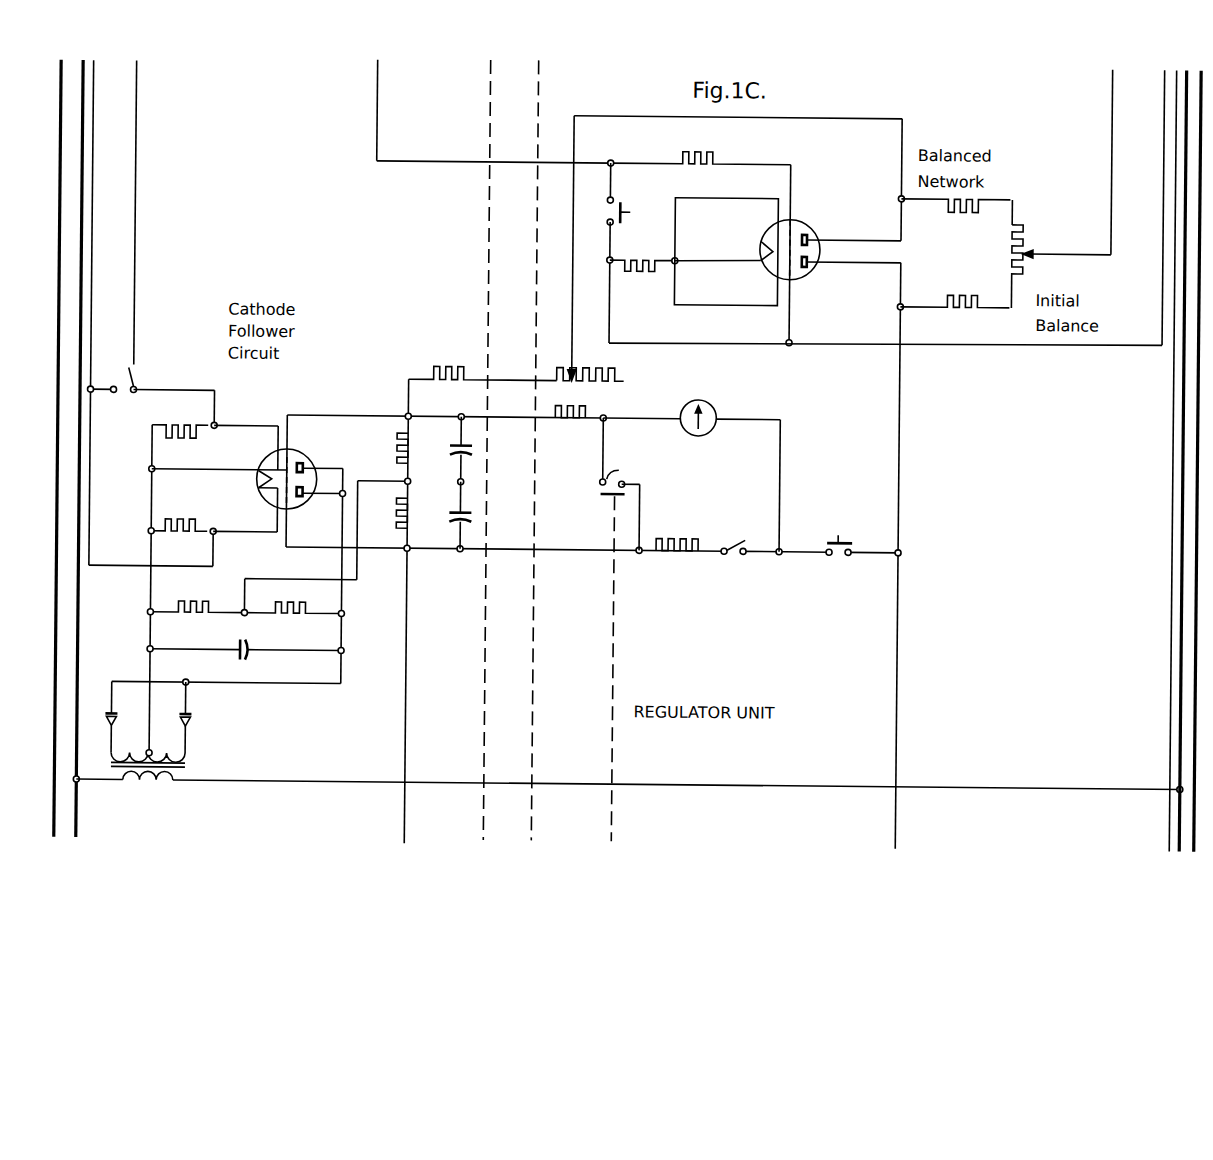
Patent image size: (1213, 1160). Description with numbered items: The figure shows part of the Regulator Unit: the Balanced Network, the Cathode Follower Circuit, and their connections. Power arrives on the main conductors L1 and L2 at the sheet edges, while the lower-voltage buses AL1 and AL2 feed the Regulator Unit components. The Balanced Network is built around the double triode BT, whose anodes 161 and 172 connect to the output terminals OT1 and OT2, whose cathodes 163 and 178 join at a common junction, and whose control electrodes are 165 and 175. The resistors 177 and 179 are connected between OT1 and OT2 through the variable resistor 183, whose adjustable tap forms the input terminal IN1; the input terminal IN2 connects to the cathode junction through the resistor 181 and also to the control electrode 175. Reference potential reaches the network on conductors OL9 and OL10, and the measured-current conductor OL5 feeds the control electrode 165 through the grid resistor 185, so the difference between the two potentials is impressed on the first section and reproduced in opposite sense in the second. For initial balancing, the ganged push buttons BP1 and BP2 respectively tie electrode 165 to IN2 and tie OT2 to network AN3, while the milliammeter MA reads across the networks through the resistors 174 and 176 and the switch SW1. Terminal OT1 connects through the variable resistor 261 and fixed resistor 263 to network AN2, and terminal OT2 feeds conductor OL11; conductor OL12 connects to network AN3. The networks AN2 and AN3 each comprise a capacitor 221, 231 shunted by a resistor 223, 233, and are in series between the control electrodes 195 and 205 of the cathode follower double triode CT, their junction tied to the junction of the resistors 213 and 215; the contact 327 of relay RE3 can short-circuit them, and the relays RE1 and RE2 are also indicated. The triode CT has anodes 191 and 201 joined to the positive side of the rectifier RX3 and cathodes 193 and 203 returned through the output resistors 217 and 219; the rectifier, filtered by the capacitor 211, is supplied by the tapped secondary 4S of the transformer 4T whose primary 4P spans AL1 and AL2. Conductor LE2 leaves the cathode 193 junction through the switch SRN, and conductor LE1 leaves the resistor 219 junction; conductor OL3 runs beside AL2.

The conductor L1 is at (58, 607).
The conductor AL1 is at (88, 633).
The conductor LE1 is at (90, 180).
The conductor LE2 is at (134, 232).
The switch SRN is at (137, 380).
The output resistor 217 is at (186, 428).
The output resistor 219 is at (180, 534).
The double triode CT is at (280, 479).
The control electrode 195 is at (290, 460).
The cathode 193 is at (275, 466).
The anode 191 is at (304, 468).
The anode 201 is at (306, 497).
The cathode 203 is at (270, 496).
The control electrode 205 is at (291, 506).
The resistor 213 is at (186, 605).
The resistor 215 is at (284, 617).
The capacitor 211 is at (240, 643).
The rectifier RX3 is at (236, 728).
The transformer 4T is at (163, 765).
The secondary 4S is at (140, 754).
The primary 4P is at (150, 790).
The conductor OL12 is at (409, 694).
The fixed resistor 263 is at (447, 368).
The variable resistor 261 is at (612, 377).
The resistor 176 is at (585, 416).
The network AN2 is at (415, 449).
The resistor 223 is at (397, 449).
The capacitor 221 is at (460, 450).
The network AN3 is at (415, 515).
The resistor 233 is at (397, 515).
The capacitor 231 is at (460, 516).
The relay RE1 is at (485, 630).
The relay RE2 is at (537, 642).
The relay RE3 is at (618, 642).
The contact 327 is at (624, 480).
The milliammeter MA is at (712, 406).
The resistor 174 is at (663, 540).
The switch SW1 is at (747, 540).
The push button BP2 is at (845, 526).
The conductor OL11 is at (903, 530).
The output conductor OL5 is at (372, 126).
The grid resistor 185 is at (714, 157).
The push button BP1 is at (624, 207).
The input terminal IN2 is at (615, 257).
The resistor 181 is at (643, 273).
The conductor OL9 is at (1090, 343).
The double triode BT is at (804, 252).
The control electrode 165 is at (795, 230).
The control electrode 175 is at (794, 281).
The cathode 163 is at (773, 234).
The cathode 178 is at (768, 266).
The anode 161 is at (810, 240).
The anode 172 is at (812, 264).
The output terminal OT1 is at (897, 197).
The output terminal OT2 is at (896, 306).
The resistor 177 is at (962, 211).
The resistor 179 is at (960, 296).
The input terminal IN1 is at (1040, 254).
The variable resistor 183 is at (1022, 232).
The conductor OL10 is at (1108, 128).
The conductor OL3 is at (1172, 643).
The conductor AL2 is at (1182, 574).
The conductor L2 is at (1197, 721).